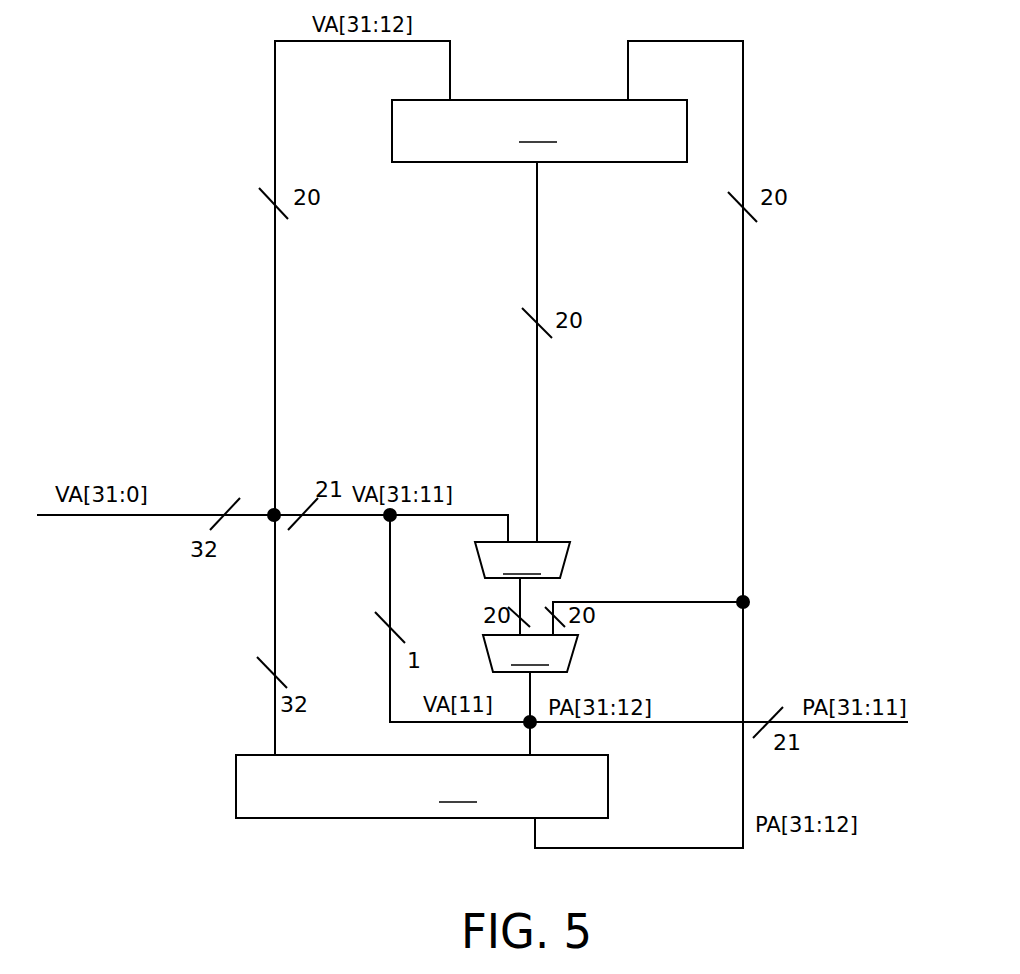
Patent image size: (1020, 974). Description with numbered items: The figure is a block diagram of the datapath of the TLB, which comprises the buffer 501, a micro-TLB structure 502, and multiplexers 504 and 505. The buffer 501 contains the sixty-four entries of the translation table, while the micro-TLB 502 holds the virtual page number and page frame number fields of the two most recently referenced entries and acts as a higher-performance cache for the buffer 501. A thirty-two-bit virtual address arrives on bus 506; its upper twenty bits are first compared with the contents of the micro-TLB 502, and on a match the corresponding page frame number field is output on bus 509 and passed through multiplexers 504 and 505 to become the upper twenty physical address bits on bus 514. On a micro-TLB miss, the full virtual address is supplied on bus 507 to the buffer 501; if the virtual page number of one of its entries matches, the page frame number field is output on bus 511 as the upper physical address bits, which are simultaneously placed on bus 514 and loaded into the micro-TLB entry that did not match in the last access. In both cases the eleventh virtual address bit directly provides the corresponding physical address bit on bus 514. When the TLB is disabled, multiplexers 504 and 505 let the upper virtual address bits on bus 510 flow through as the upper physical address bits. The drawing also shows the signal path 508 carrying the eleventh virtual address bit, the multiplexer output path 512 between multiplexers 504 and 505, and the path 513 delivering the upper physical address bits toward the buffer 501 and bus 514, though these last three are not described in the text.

The buffer 501 is at (422, 786).
The micro-TLB structure 502 is at (539, 131).
The multiplexer 504 is at (522, 560).
The multiplexer 505 is at (530, 653).
The bus 506 is at (80, 516).
The bus 507 is at (274, 650).
The VA[11] signal line 508 is at (391, 688).
The bus 509 is at (537, 457).
The bus 510 is at (505, 512).
The bus 511 is at (275, 338).
The multiplexer 504 output bus 512 is at (520, 598).
The PA[31:12] output of multiplexer 505 513 is at (531, 750).
The bus 514 is at (860, 722).